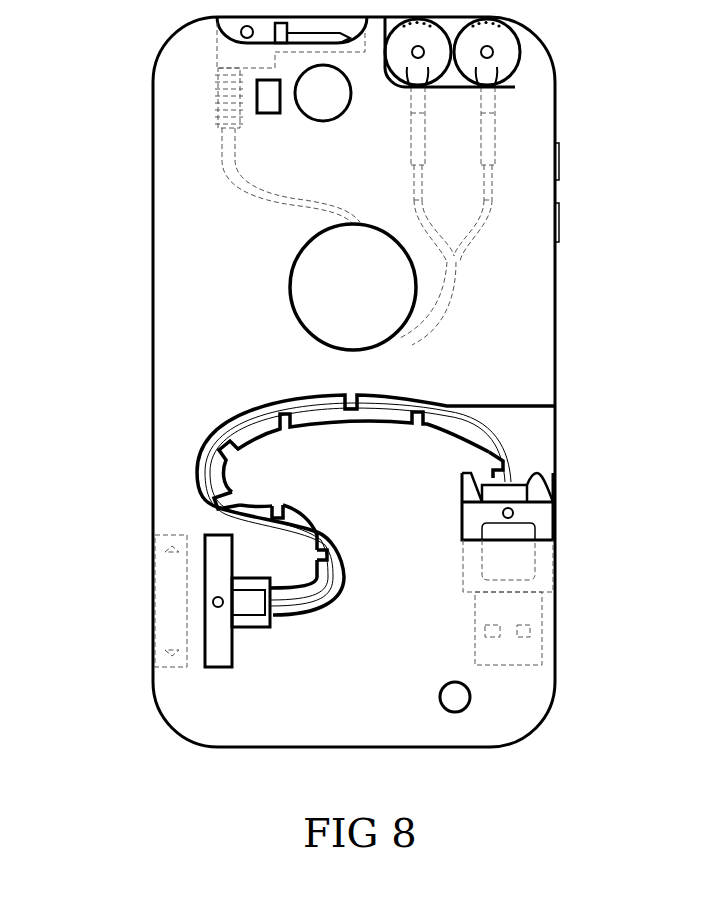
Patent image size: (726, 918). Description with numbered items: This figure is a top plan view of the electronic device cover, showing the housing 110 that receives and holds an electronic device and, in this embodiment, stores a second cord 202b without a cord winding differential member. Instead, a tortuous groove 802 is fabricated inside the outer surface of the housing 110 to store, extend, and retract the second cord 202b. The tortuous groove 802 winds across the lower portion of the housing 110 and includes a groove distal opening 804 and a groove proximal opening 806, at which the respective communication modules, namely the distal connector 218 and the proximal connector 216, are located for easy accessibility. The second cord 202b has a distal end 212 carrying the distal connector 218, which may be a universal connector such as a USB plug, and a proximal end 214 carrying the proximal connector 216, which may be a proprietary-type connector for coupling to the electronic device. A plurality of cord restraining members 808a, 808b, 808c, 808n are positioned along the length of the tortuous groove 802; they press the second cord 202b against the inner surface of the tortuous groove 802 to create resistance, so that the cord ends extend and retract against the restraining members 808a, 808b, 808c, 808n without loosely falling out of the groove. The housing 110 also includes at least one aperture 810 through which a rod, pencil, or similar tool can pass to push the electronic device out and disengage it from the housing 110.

The housing 110 is at (229, 284).
The second cord 202b is at (240, 425).
The tortuous groove 802 is at (169, 439).
The groove distal opening 804 is at (582, 442).
The groove proximal opening 806 is at (257, 653).
The cord restraining member 808a is at (309, 552).
The cord restraining member 808b is at (270, 504).
The cord restraining member 808c is at (220, 498).
The cord restraining member 808n is at (500, 453).
The aperture 810 is at (470, 697).
The distal end 212 is at (548, 513).
The proximal end 214 is at (218, 693).
The proximal connector 216 is at (175, 600).
The distal connector 218 is at (542, 572).